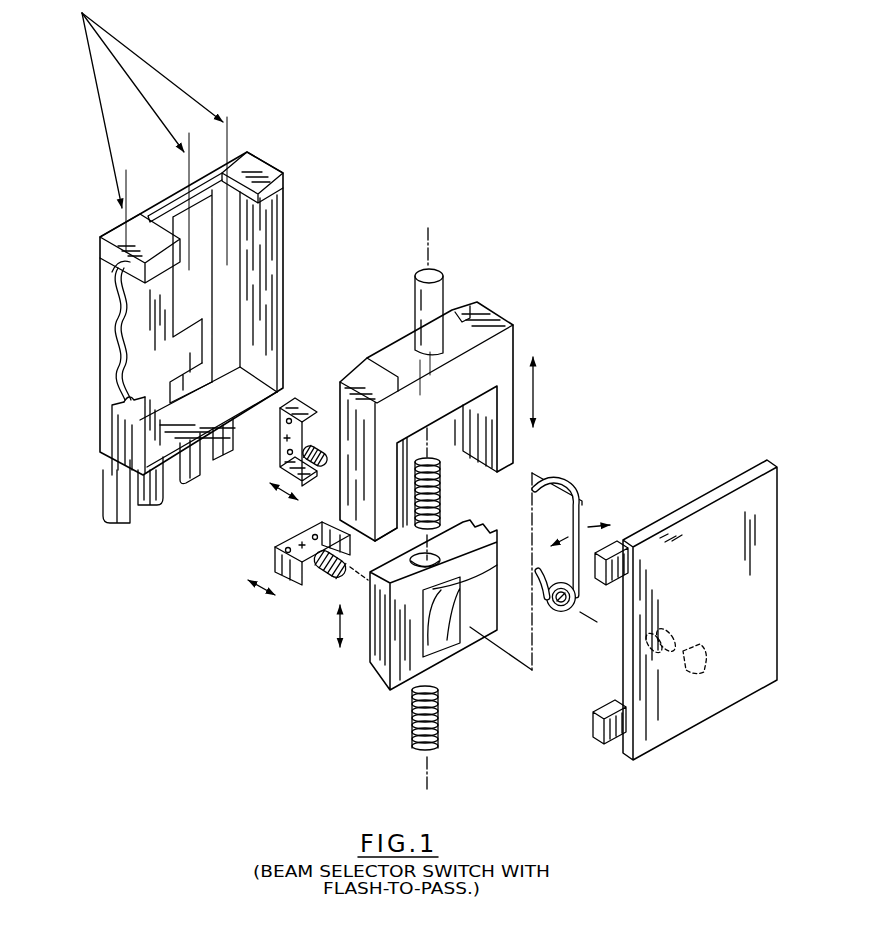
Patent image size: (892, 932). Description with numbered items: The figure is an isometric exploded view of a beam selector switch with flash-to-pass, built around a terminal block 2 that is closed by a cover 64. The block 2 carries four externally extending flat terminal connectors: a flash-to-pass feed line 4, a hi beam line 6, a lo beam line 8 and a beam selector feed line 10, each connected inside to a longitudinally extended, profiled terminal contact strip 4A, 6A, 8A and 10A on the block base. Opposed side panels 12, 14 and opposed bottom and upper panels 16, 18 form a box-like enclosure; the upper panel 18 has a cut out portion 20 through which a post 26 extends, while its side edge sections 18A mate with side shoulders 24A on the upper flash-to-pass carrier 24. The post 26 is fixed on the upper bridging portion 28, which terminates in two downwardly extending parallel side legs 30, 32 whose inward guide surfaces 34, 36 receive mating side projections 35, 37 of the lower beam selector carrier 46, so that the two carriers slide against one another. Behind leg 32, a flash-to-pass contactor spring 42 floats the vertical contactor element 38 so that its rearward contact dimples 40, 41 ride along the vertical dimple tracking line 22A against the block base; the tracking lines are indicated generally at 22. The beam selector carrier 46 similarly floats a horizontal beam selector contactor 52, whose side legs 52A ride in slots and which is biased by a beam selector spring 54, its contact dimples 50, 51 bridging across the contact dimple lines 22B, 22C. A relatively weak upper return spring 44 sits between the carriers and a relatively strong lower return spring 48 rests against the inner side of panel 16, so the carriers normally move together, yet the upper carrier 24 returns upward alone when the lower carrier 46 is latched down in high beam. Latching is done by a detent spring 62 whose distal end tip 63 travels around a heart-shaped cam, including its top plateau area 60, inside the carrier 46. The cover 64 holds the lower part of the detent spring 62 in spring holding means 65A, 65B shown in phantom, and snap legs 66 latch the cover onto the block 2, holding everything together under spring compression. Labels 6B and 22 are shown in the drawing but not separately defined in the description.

The terminal block 2 is at (250, 168).
The flash-to-pass feed line terminal connector 4 is at (110, 490).
The terminal contact strip 4A is at (130, 397).
The hi beam line terminal connector 6 is at (153, 487).
The terminal contact strip 6A is at (130, 315).
The contact slot 6B is at (203, 355).
The lo beam line terminal connector 8 is at (190, 472).
The terminal contact strip 8A is at (203, 292).
The beam selector feed line terminal connector 10 is at (230, 440).
The terminal contact strip 10A is at (212, 378).
The side panel 12 is at (120, 443).
The side panel 14 is at (272, 235).
The bottom panel 16 is at (247, 398).
The upper panel 18 is at (118, 222).
The side edge section 18A is at (285, 169).
The cut out portion 20 is at (166, 218).
The insertion paths 22 is at (82, 13).
The vertical dimple tracking line 22A is at (112, 163).
The contact dimple line 22B is at (158, 116).
The contact dimple line 22C is at (192, 97).
The flash-to-pass carrier 24 is at (493, 316).
The side shoulder 24A is at (513, 318).
The post 26 is at (437, 270).
The upper bridging portion 28 is at (466, 390).
The side leg 30 is at (513, 438).
The side leg 32 is at (375, 479).
The guide surface 34 is at (471, 465).
The side projection 35 is at (485, 521).
The guide surface 36 is at (393, 520).
The side projection 37 is at (387, 673).
The flash-to-pass contactor element 38 is at (316, 397).
The contact dimple 40 is at (283, 400).
The contact dimple 41 is at (278, 470).
The flash-to-pass contactor spring 42 is at (300, 437).
The upper return spring 44 is at (440, 483).
The beam selector carrier 46 is at (454, 660).
The lower return spring 48 is at (412, 728).
The beam selector contact dimple 50 is at (290, 518).
The beam selector contact dimple 51 is at (308, 522).
The beam selector contactor 52 is at (274, 556).
The side leg 52A is at (352, 542).
The beam selector spring 54 is at (332, 577).
The top plateau area 60 is at (493, 543).
The detent spring 62 is at (565, 622).
The distal end tip 63 is at (566, 485).
The cover 64 is at (714, 613).
The spring holding means 65A is at (693, 675).
The spring holding means 65B is at (663, 655).
The snap leg 66 is at (603, 712).